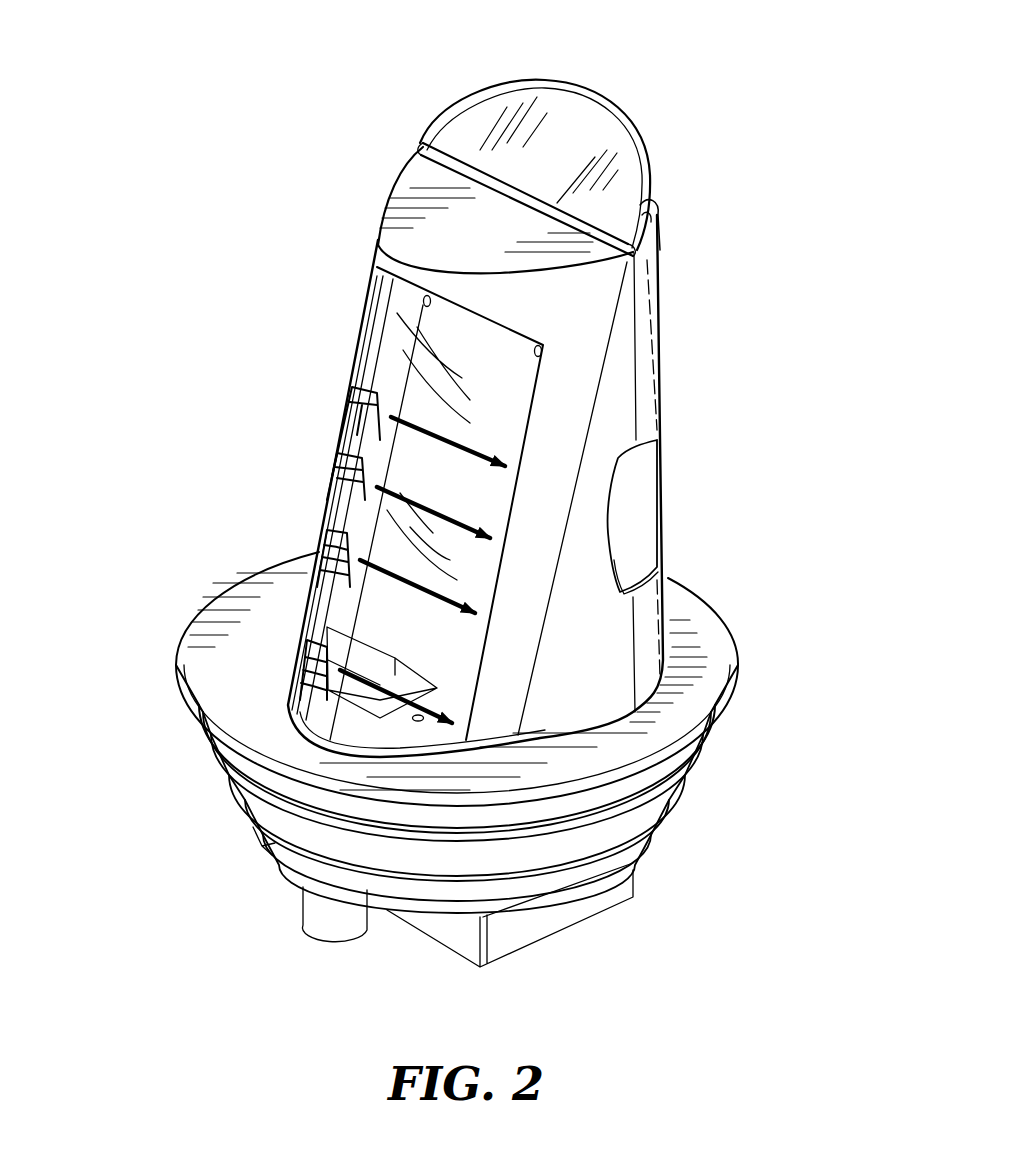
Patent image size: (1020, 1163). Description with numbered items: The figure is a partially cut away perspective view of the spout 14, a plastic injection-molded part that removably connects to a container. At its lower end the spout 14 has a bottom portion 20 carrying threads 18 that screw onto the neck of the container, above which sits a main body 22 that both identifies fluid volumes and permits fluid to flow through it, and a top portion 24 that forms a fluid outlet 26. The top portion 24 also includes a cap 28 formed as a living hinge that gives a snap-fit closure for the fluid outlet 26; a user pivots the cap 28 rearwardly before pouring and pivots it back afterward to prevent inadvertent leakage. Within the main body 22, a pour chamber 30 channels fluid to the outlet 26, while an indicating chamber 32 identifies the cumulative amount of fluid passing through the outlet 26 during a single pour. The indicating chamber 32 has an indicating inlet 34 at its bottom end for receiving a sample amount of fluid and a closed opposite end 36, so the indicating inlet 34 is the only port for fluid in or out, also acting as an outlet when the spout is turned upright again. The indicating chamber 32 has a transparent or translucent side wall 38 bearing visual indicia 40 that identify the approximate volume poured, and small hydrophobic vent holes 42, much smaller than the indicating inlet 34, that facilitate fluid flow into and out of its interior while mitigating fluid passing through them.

The spout 14 is at (727, 120).
The threads 18 is at (665, 782).
The bottom portion 20 is at (225, 838).
The main body 22 is at (272, 408).
The top portion 24 is at (305, 200).
The fluid outlet 26 is at (657, 198).
The cap 28 is at (493, 113).
The pour chamber 30 is at (628, 510).
The indicating chamber 32 is at (445, 378).
The indicating inlet 34 is at (400, 686).
The closed opposite end 36 is at (425, 183).
The side wall 38 is at (322, 462).
The visual indicia 40 is at (398, 446).
The vent holes 42 is at (530, 352).